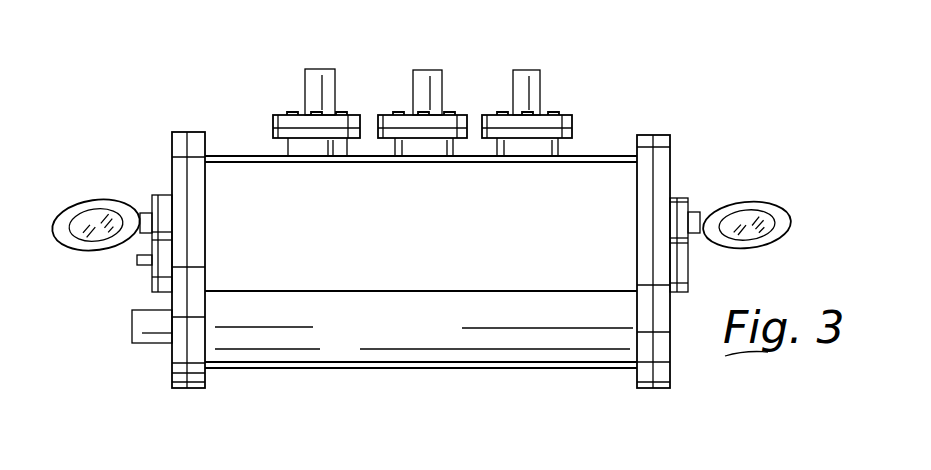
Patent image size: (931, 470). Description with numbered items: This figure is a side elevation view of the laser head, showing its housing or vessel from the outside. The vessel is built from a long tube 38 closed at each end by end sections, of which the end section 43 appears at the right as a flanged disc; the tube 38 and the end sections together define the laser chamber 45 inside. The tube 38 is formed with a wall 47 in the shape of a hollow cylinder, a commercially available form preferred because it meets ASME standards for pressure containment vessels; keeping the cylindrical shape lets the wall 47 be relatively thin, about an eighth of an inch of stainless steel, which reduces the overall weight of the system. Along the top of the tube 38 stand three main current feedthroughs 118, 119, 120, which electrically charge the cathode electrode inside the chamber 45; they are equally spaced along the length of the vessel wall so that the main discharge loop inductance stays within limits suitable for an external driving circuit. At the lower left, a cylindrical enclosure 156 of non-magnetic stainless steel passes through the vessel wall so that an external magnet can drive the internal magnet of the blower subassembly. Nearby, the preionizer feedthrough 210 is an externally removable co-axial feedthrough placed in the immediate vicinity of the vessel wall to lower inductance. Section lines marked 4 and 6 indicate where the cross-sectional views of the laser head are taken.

The tube 38 is at (388, 392).
The end section 43 is at (659, 396).
The laser chamber 45 is at (578, 333).
The wall 47 is at (495, 352).
The main current feedthrough 118 is at (276, 112).
The main current feedthrough 119 is at (459, 108).
The main current feedthrough 120 is at (566, 109).
The cylindrical enclosure 156 is at (140, 340).
The preionizer feedthrough 210 is at (140, 263).
The section line 4- 4 is at (188, 352).
The section line 6- 6 is at (427, 57).